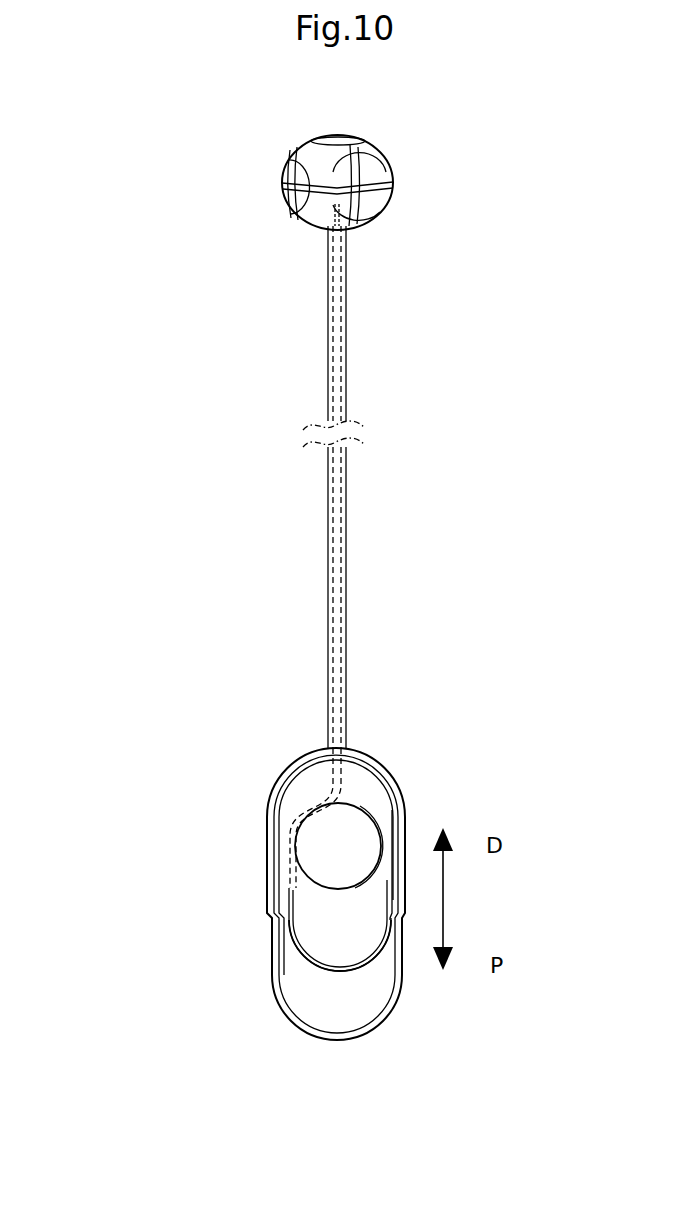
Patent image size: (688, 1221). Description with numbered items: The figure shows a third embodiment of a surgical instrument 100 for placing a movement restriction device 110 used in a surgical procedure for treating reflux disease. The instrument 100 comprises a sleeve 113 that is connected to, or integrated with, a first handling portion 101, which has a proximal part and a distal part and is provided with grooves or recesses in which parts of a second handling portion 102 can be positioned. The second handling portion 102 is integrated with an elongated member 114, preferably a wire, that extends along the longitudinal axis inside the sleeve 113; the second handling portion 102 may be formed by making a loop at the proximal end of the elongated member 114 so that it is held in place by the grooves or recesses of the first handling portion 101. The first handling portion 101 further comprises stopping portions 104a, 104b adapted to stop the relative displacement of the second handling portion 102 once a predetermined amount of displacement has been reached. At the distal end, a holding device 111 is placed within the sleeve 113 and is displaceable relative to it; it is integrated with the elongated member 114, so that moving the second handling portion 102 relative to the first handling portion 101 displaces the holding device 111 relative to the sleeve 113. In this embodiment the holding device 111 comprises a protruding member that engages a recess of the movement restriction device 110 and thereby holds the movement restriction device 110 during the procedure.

The surgical instrument 100 is at (150, 292).
The first handling portion 101 is at (368, 783).
The second handling portion 102 is at (327, 903).
The stopping portion 104a is at (340, 827).
The stopping portion 104b is at (333, 970).
The movement restriction device 110 is at (377, 157).
The holding device 111 is at (333, 213).
The sleeve 113 is at (347, 375).
The elongated member 114 is at (338, 287).